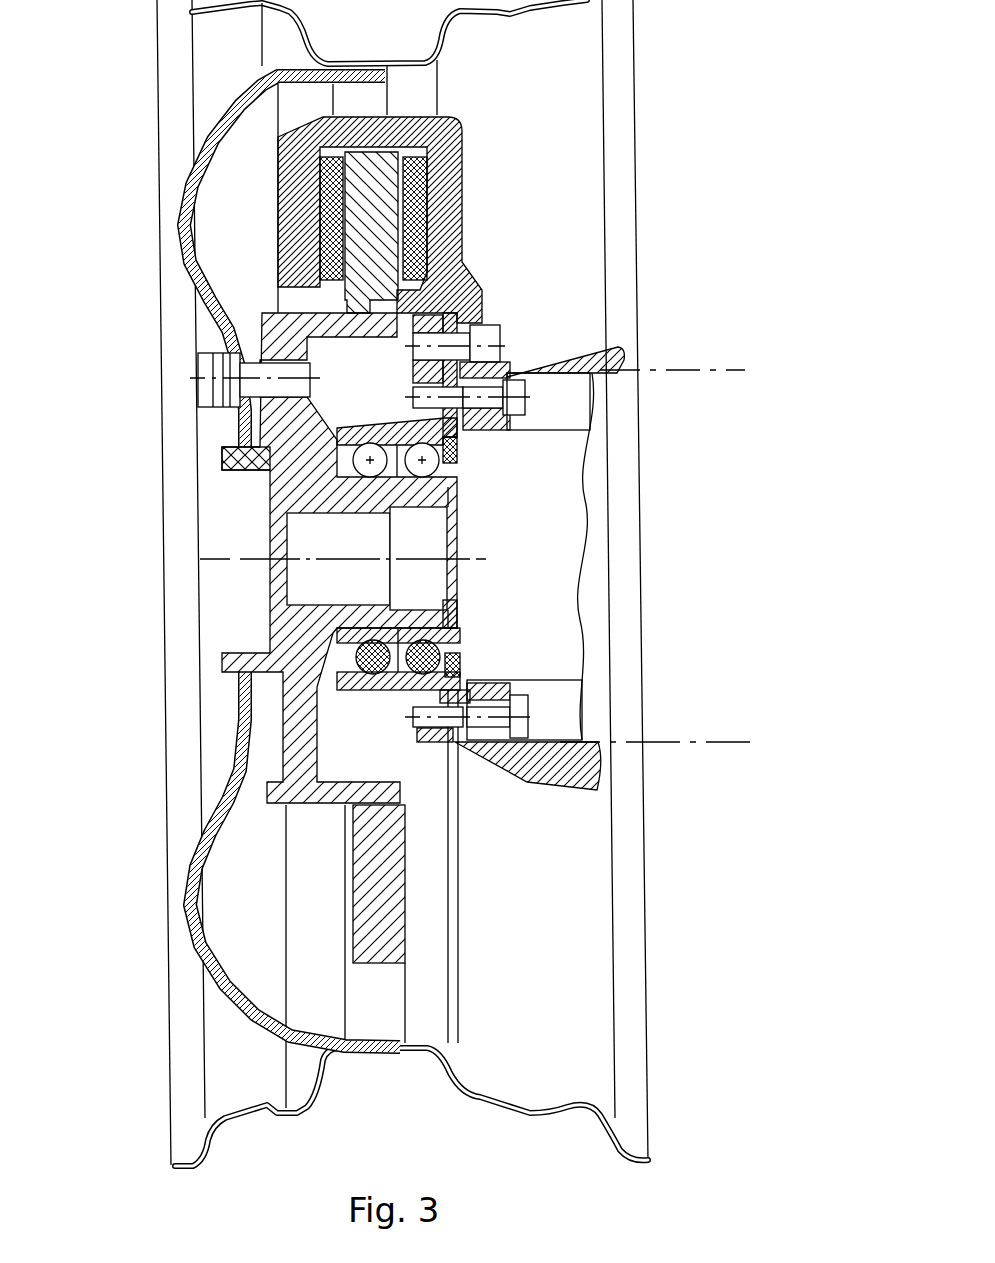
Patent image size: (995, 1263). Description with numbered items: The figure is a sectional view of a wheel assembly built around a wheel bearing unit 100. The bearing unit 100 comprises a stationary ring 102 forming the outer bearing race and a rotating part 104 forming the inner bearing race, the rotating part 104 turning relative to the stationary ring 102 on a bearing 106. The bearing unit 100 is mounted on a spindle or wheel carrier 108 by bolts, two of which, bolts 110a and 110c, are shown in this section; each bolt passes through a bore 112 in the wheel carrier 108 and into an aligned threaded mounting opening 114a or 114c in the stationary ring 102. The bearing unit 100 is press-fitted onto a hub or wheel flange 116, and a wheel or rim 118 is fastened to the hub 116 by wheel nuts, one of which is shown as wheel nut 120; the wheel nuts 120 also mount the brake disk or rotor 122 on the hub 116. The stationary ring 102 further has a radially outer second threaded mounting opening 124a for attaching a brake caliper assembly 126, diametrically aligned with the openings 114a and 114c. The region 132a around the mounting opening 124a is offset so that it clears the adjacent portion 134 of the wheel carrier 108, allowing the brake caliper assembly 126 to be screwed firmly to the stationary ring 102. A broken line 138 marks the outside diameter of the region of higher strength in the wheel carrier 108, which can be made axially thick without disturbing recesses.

The wheel bearing unit 100 is at (385, 756).
The stationary ring 102 is at (393, 682).
The rotating part 104 is at (460, 633).
The bearing 106 is at (468, 658).
The wheel carrier 108 is at (537, 768).
The bolt 110a is at (527, 393).
The bolt 110c is at (530, 717).
The bore 112 is at (488, 407).
The threaded mounting opening 114a is at (455, 432).
The threaded mounting opening 114c is at (440, 743).
The hub 116 is at (228, 458).
The wheel 118 is at (173, 127).
The wheel nut 120 is at (197, 377).
The brake disk 122 is at (437, 173).
The second threaded mounting opening 124a is at (470, 310).
The brake caliper assembly 126 is at (268, 221).
The region 132a is at (443, 330).
The adjacent portion 134 is at (452, 381).
The broken line 138 is at (693, 367).